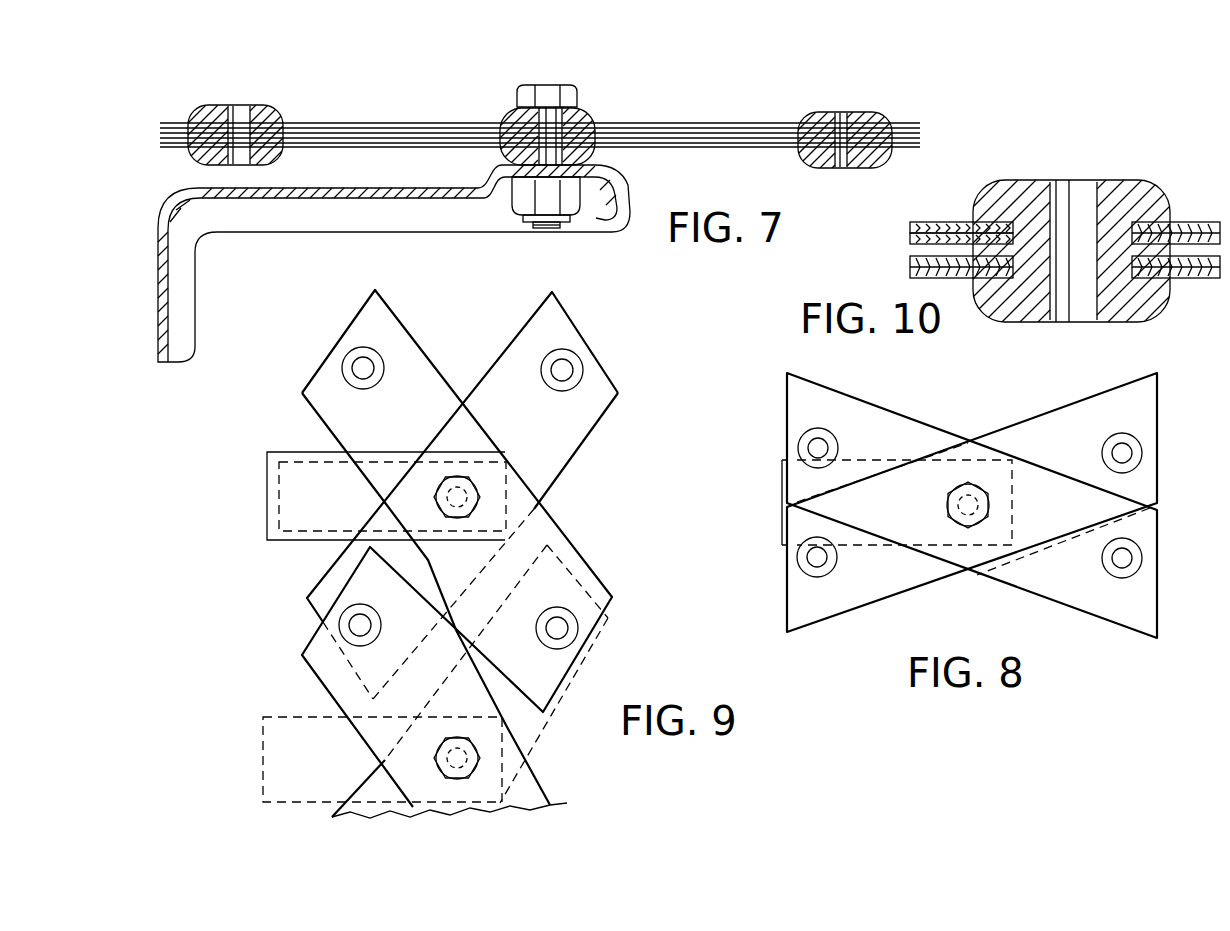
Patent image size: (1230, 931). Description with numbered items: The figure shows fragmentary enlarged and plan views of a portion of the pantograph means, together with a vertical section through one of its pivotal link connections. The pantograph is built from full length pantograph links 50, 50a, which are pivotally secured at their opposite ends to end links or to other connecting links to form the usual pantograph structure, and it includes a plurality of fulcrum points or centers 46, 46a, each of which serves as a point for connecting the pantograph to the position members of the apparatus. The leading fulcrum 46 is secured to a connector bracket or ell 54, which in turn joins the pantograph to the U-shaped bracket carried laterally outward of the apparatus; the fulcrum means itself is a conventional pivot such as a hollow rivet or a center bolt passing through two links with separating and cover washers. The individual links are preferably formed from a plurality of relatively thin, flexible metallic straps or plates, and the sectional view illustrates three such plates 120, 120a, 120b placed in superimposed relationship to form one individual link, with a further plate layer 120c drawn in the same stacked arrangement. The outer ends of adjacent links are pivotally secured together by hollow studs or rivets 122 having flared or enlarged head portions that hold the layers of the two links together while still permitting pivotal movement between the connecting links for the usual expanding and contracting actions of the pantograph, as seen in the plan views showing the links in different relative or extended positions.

In FIG. 8, the fulcrum 46 is at (990, 511).
In FIG. 9, the fulcrum 46 is at (452, 497).
In FIG. 7, the fulcrum center 46a is at (542, 229).
In FIG. 7, the full length pantograph link 50 is at (442, 149).
In FIG. 7, the full length pantograph link 50a is at (447, 123).
In FIG. 7, the connector bracket or ell 54 is at (431, 232).
In FIG. 8, the connector bracket or ell 54 is at (782, 498).
In FIG. 9, the connector bracket or ell 54 is at (267, 470).
In FIG. 8, the plate 120 is at (929, 412).
In FIG. 10, the plate 120a is at (912, 228).
In FIG. 10, the plate 120b is at (912, 235).
In FIG. 10, the strap wire layer 120c is at (912, 244).
In FIG. 7, the hollow stud or rivet 122 is at (832, 112).
In FIG. 10, the hollow stud or rivet 122 is at (1050, 180).
In FIG. 8, the hollow stud or rivet 122 is at (1135, 458).
In FIG. 9, the hollow stud or rivet 122 is at (570, 628).